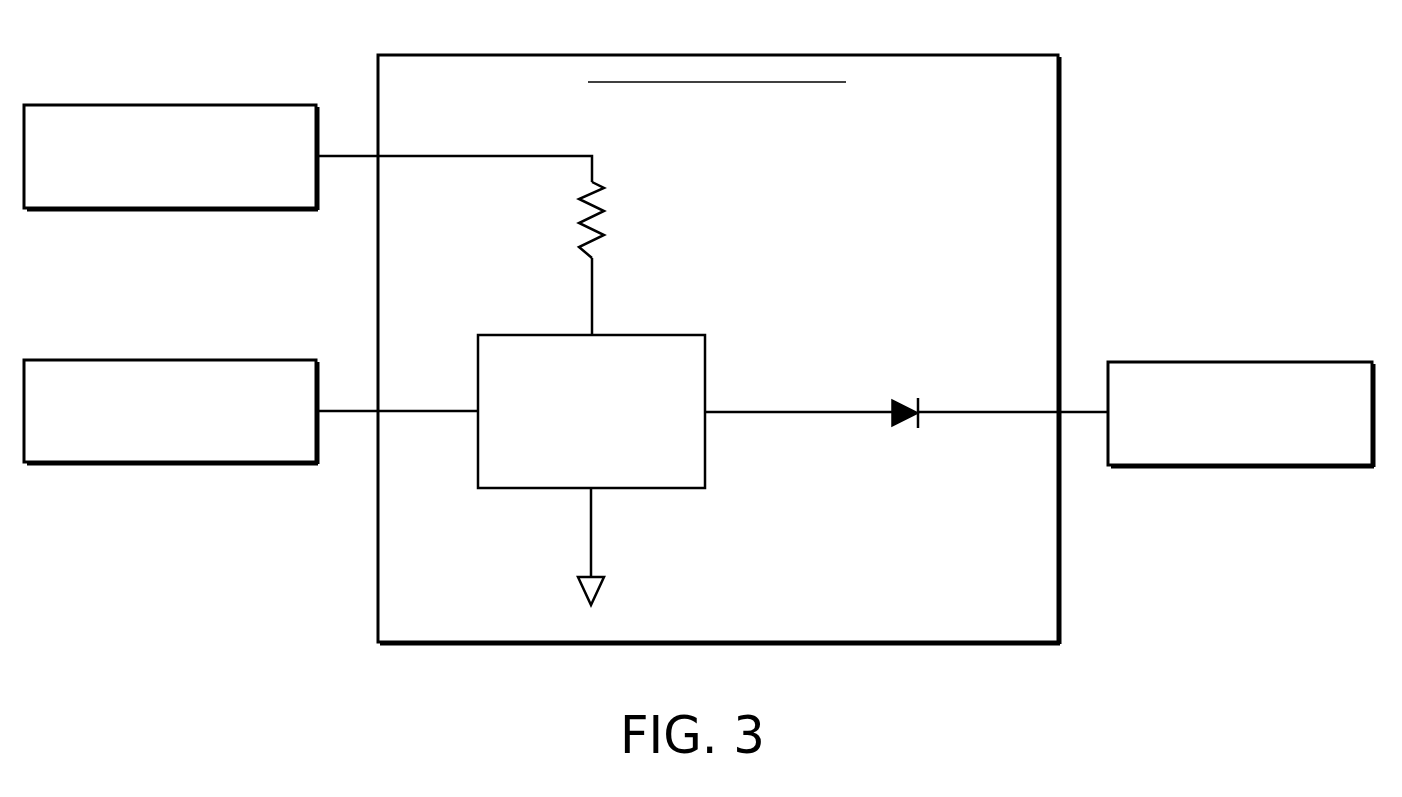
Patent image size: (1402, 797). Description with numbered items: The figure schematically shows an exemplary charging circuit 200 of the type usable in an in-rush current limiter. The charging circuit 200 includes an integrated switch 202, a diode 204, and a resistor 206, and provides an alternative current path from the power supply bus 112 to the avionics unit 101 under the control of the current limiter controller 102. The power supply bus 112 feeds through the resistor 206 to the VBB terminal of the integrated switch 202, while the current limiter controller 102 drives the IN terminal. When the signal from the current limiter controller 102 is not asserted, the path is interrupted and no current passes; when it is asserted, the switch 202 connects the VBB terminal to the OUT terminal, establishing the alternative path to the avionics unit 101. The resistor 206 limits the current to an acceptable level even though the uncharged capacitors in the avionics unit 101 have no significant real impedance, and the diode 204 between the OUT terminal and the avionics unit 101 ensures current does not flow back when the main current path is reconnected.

The power supply bus 112 is at (152, 103).
The current limiter controller 102 is at (137, 358).
The avionics unit 101 is at (1203, 360).
The charging circuit 200 is at (865, 53).
The resistor 206 is at (598, 197).
The integrated switch 202 is at (652, 335).
The diode 204 is at (907, 398).